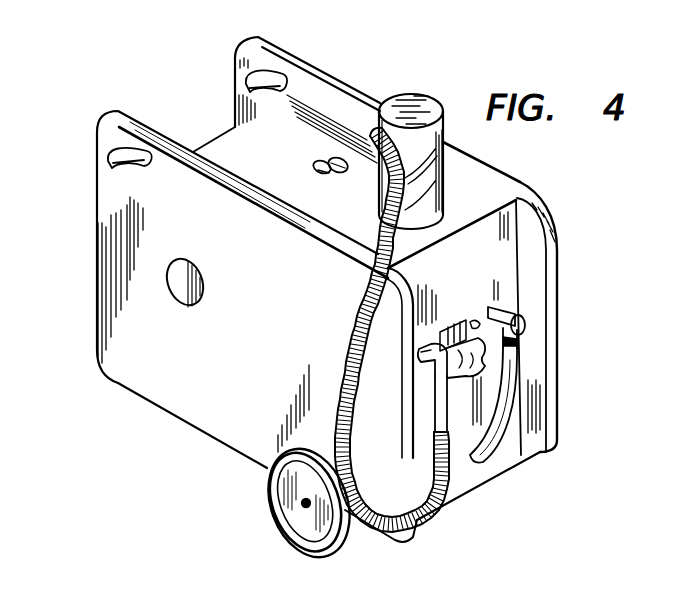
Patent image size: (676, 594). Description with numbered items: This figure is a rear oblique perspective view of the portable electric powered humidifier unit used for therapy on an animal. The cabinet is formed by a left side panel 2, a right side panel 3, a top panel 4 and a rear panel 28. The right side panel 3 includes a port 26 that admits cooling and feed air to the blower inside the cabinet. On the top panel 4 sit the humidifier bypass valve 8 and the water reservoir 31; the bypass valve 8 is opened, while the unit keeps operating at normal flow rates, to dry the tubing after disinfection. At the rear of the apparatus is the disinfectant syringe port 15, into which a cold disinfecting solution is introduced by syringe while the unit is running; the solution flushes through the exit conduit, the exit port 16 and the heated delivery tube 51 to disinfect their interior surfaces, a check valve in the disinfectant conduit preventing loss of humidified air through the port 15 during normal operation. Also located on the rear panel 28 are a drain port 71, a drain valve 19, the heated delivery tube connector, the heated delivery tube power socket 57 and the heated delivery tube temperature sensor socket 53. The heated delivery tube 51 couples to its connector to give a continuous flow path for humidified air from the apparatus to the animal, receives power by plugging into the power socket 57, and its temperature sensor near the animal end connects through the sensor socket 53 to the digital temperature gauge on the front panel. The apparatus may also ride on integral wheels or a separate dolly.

The left side panel 2 is at (302, 67).
The right side panel 3 is at (98, 210).
The top panel 4 is at (333, 103).
The bypass valve 8 is at (324, 158).
The disinfectant port 15 is at (427, 328).
The exit port 16 is at (435, 366).
The drain valve 19 is at (526, 330).
The port 26 is at (203, 266).
The rear panel 28 is at (513, 287).
The water reservoir 31 is at (443, 117).
The heated delivery tube 51 is at (358, 322).
The heated delivery tube temperature sensor socket 53 is at (450, 332).
The heated delivery tube power socket 57 is at (475, 321).
The drain port 71 is at (502, 336).